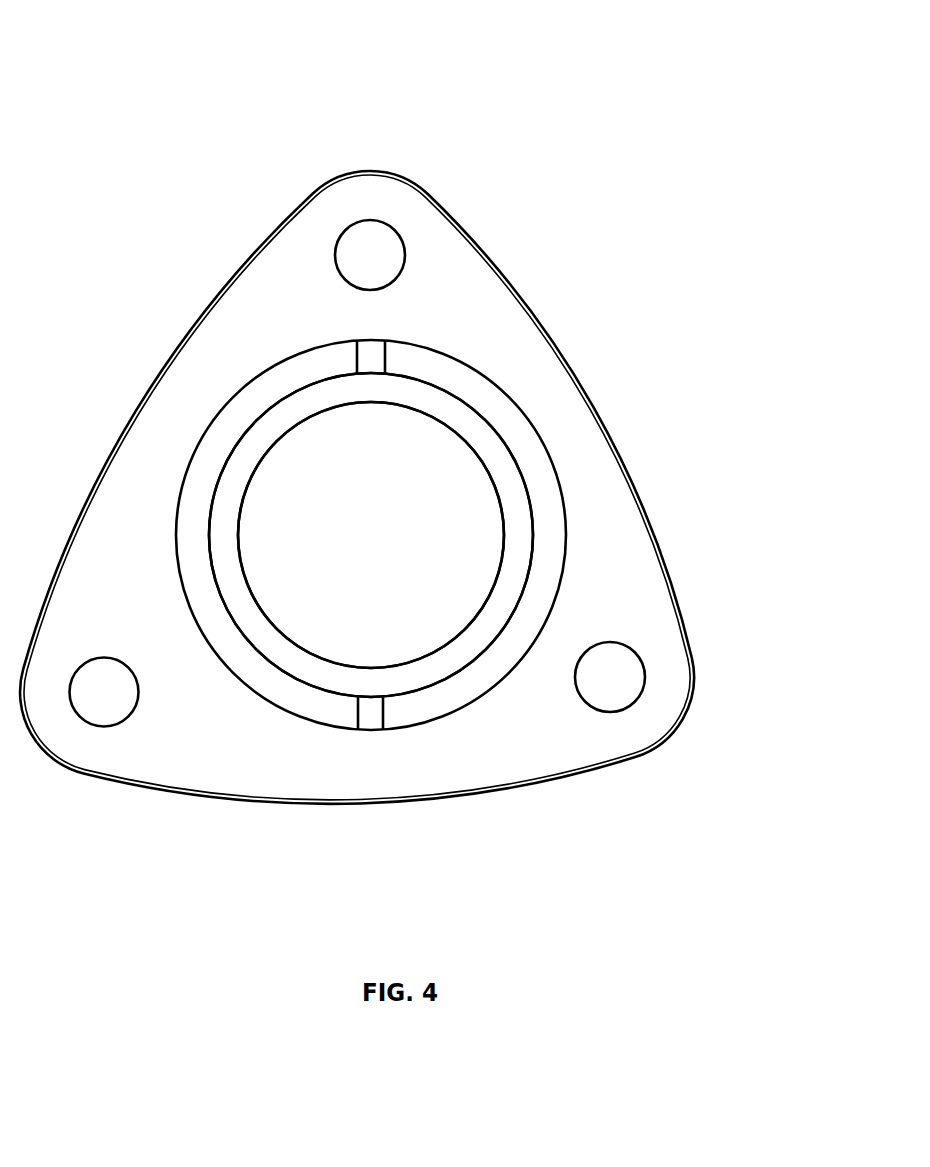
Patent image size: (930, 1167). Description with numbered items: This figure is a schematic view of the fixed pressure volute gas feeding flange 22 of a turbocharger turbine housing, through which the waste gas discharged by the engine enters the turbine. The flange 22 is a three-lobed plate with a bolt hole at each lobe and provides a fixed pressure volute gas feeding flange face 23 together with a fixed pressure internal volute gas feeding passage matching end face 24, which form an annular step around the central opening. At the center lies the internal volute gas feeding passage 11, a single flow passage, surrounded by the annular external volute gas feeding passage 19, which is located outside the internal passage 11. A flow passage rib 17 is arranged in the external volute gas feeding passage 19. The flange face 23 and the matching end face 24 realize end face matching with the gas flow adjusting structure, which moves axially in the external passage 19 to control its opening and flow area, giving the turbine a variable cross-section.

The fixed pressure volute gas feeding flange 22 is at (420, 438).
The fixed pressure volute gas feeding flange face 23 is at (418, 437).
The fixed pressure internal volute gas feeding passage matching end face 24 is at (496, 511).
The internal volute gas feeding passage 11 is at (526, 535).
The external volute gas feeding passage 19 is at (513, 535).
The flow passage rib 17 is at (589, 778).